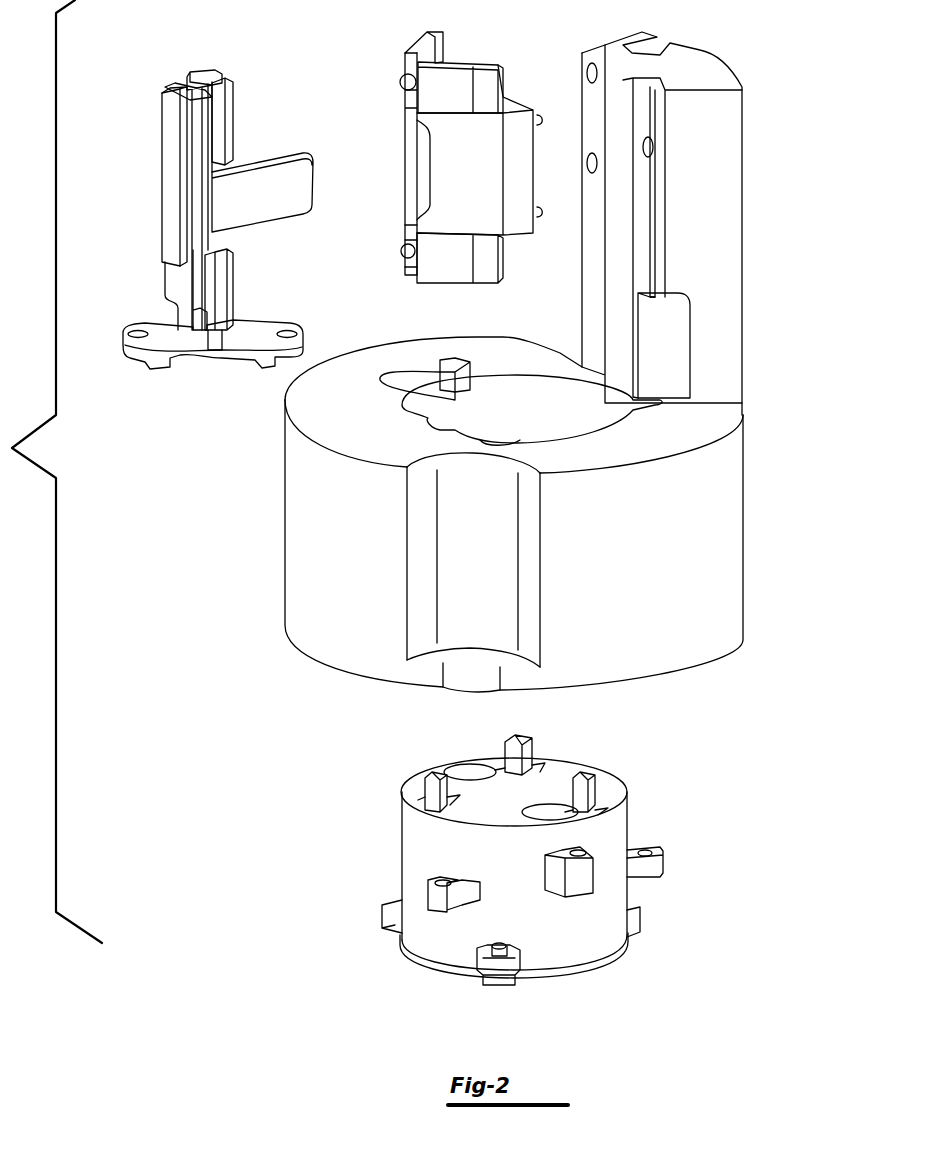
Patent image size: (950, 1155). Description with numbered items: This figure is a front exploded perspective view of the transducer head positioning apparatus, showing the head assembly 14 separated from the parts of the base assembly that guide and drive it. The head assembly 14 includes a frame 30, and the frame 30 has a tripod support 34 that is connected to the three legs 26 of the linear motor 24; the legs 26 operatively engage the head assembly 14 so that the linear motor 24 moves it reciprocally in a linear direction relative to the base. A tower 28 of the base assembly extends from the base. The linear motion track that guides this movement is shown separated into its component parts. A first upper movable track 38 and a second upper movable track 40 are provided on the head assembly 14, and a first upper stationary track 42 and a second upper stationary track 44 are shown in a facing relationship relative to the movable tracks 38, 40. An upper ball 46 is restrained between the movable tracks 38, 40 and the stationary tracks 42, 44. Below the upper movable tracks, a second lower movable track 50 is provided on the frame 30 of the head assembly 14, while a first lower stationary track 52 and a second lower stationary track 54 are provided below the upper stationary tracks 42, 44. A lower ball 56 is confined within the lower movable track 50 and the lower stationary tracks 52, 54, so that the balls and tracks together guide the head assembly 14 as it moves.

The head assembly 14 is at (148, 197).
The linear motor 24 is at (585, 950).
The legs 26 is at (530, 740).
The tower 28 is at (733, 256).
The frame 30 is at (168, 280).
The tripod support 34 is at (245, 348).
The first upper movable track 38 is at (225, 75).
The second upper movable track 40 is at (234, 110).
The first upper stationary track 42 is at (407, 63).
The second upper stationary track 44 is at (407, 102).
The upper ball 46 is at (400, 83).
The second lower movable track 50 is at (233, 286).
The first lower stationary track 52 is at (407, 233).
The second lower stationary track 54 is at (405, 272).
The lower ball 56 is at (403, 258).